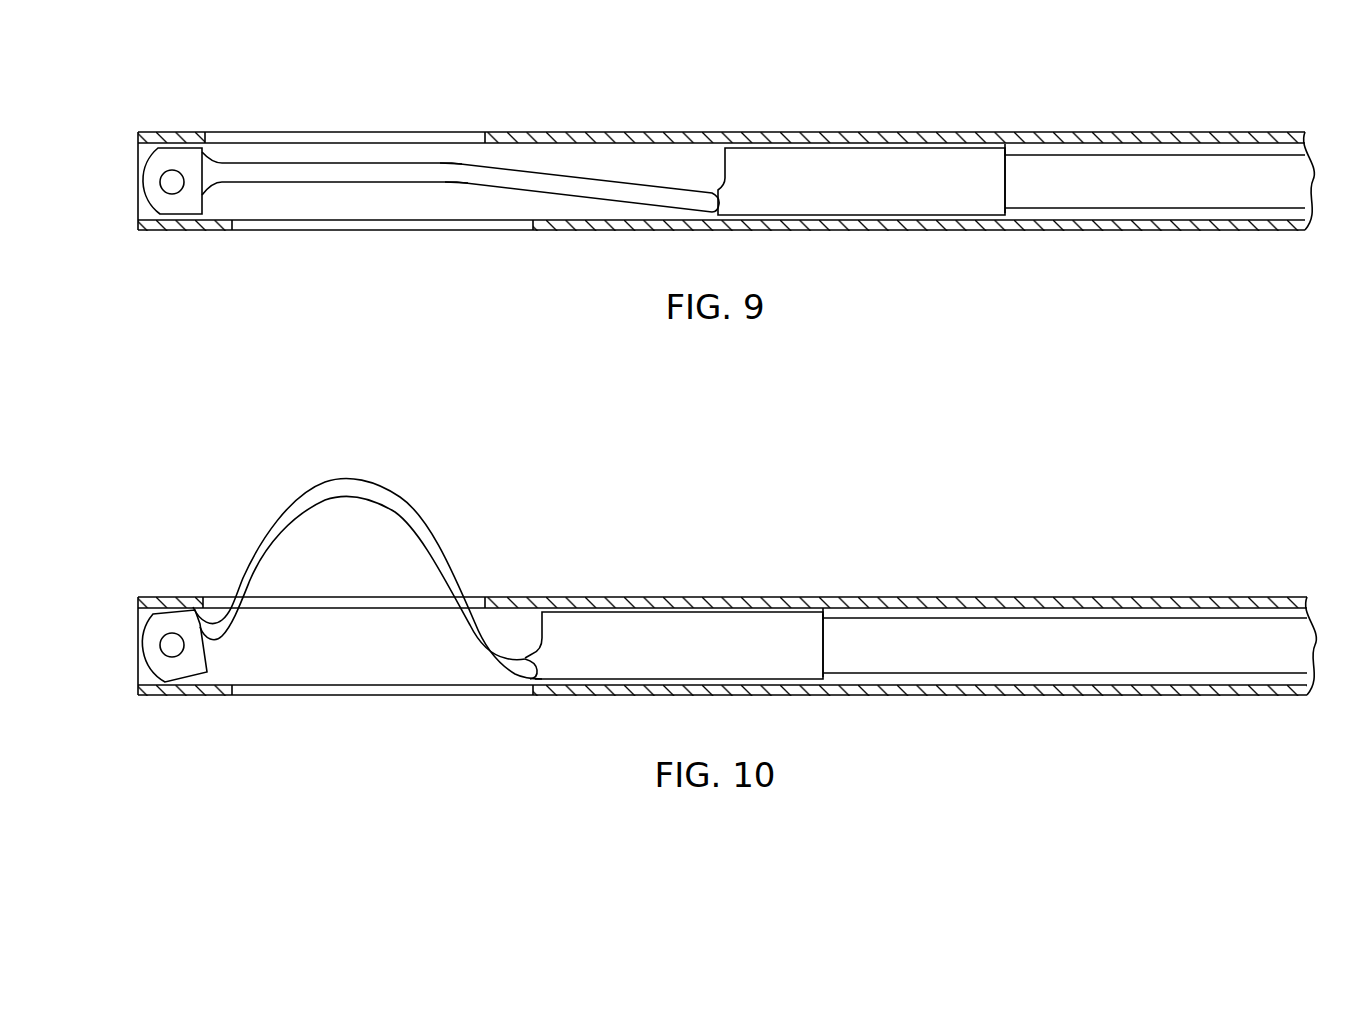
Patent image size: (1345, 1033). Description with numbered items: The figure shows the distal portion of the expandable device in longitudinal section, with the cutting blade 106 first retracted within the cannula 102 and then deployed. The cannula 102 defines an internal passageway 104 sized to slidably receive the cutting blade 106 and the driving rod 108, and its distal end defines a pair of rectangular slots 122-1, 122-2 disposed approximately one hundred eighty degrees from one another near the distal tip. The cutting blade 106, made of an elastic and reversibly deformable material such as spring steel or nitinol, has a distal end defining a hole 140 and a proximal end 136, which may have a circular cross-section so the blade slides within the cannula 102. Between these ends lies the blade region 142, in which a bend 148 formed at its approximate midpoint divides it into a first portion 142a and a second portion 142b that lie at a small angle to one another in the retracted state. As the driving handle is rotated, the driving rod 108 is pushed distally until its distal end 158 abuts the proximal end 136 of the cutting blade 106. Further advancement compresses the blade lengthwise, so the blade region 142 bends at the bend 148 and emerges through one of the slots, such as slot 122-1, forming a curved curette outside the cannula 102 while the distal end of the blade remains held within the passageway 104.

In FIG. 9, the cannula 102 is at (1187, 132).
In FIG. 10, the cannula 102 is at (1003, 597).
In FIG. 9, the internal passageway 104 is at (172, 182).
In FIG. 10, the internal passageway 104 is at (885, 683).
In FIG. 9, the cutting blade 106 is at (845, 175).
In FIG. 10, the cutting blade 106 is at (665, 640).
In FIG. 9, the driving rod 108 is at (1148, 183).
In FIG. 10, the driving rod 108 is at (1133, 648).
In FIG. 9, the rectangular slot 122-1 is at (252, 132).
In FIG. 10, the rectangular slot 122-1 is at (220, 597).
In FIG. 9, the rectangular slot 122-2 is at (313, 232).
In FIG. 10, the rectangular slot 122-2 is at (328, 700).
In FIG. 9, the proximal end 136 is at (1000, 180).
In FIG. 10, the proximal end 136 is at (820, 645).
In FIG. 9, the hole 140 is at (172, 181).
In FIG. 10, the hole 140 is at (172, 645).
In FIG. 10, the blade region 142 is at (432, 518).
In FIG. 9, the first portion 142a is at (358, 163).
In FIG. 9, the second portion 142b is at (603, 180).
In FIG. 9, the bend 148 is at (455, 185).
In FIG. 9, the distal end 158 is at (1010, 149).
In FIG. 10, the distal end 158 is at (832, 610).